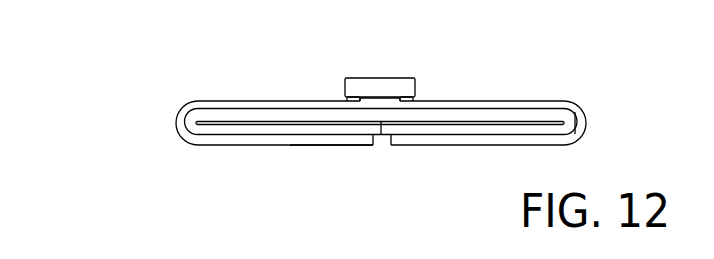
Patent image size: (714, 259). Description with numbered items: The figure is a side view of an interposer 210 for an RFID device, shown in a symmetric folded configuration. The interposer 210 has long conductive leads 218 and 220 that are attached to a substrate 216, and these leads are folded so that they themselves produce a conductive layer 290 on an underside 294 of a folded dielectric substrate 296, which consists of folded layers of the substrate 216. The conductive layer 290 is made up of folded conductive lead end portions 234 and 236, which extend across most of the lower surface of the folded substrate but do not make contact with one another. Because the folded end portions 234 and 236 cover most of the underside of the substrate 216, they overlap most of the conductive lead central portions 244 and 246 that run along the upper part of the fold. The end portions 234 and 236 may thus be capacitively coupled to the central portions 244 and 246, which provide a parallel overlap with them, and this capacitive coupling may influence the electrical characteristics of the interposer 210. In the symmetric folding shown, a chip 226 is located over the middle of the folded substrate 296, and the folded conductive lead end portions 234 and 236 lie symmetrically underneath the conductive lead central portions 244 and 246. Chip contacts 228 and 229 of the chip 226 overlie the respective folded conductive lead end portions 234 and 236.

The interposer 210 is at (153, 47).
The conductive lead 218 is at (129, 100).
The conductive lead central portion 244 is at (218, 106).
The conductive lead central portion 246 is at (456, 99).
The folded dielectric substrate 296 is at (580, 102).
The conductive lead 220 is at (597, 110).
The substrate 216 is at (503, 117).
The conductive lead end portion 234 is at (278, 143).
The conductive lead end portion 236 is at (448, 142).
The conductive layer 290 is at (368, 168).
The underside 294 is at (383, 142).
The chip 226 is at (378, 83).
The chip contact 228 is at (343, 99).
The chip contact 229 is at (413, 97).